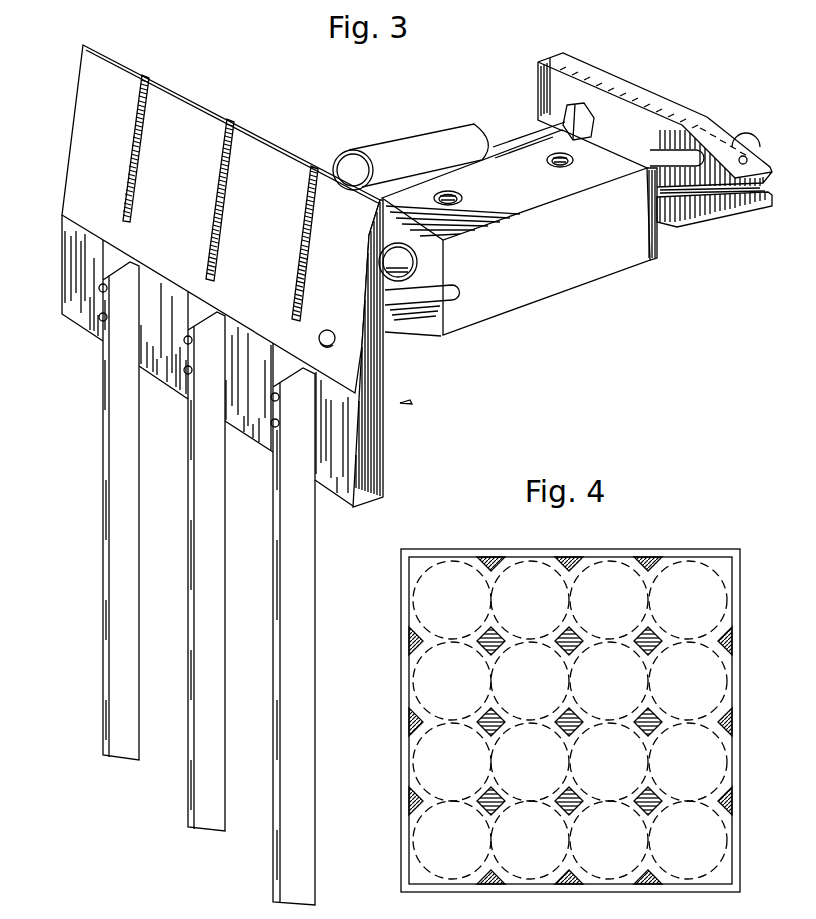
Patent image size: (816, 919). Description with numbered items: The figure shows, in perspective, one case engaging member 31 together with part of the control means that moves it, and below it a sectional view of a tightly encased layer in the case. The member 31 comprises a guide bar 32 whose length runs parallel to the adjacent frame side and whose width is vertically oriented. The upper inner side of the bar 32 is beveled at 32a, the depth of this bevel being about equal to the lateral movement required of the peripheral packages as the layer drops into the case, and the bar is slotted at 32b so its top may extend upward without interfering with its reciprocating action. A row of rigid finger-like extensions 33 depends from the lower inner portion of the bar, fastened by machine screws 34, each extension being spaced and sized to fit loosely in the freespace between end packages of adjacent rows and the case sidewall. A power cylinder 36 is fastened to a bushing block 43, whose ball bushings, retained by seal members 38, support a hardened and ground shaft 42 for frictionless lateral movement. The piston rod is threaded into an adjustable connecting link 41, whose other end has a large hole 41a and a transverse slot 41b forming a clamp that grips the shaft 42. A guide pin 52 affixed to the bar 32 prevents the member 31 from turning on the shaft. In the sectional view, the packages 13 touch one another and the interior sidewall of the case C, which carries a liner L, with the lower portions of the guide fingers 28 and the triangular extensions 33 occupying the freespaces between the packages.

In FIG. 4, the package 13 is at (428, 566).
In FIG. 4, the guide finger 28 is at (498, 648).
In FIG. 3, the case engaging member 31 is at (414, 401).
In FIG. 3, the guide bar 32 is at (370, 473).
In FIG. 3, the bevel 32a is at (270, 240).
In FIG. 3, the slot 32b is at (141, 75).
In FIG. 3, the finger-like extension 33 is at (117, 692).
In FIG. 4, the finger-like extension 33 is at (488, 557).
In FIG. 3, the machine screw 34 is at (99, 316).
In FIG. 3, the power cylinder 36 is at (431, 137).
In FIG. 3, the seal member 38 is at (506, 142).
In FIG. 3, the adjustable connecting link 41 is at (619, 88).
In FIG. 3, the hole 41a is at (678, 153).
In FIG. 3, the transverse slot 41b is at (735, 197).
In FIG. 3, the shaft 42 is at (746, 141).
In FIG. 3, the bushing block 43 is at (528, 258).
In FIG. 3, the guide pin 52 is at (449, 296).
In FIG. 4, the case C is at (407, 719).
In FIG. 4, the liner member L is at (410, 745).